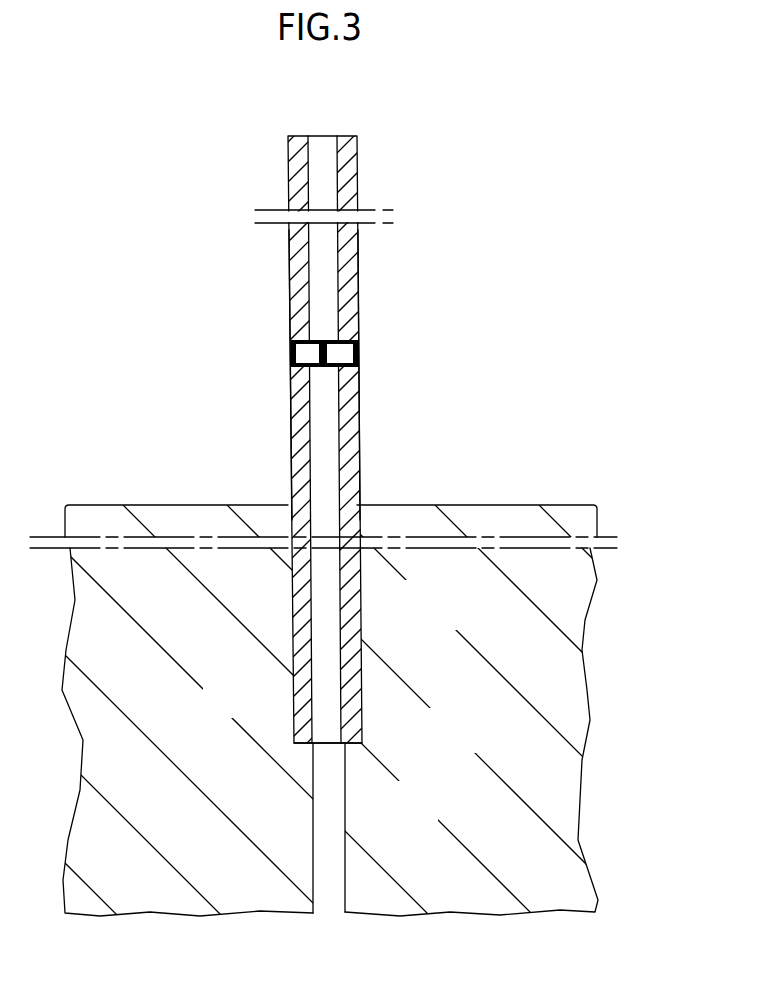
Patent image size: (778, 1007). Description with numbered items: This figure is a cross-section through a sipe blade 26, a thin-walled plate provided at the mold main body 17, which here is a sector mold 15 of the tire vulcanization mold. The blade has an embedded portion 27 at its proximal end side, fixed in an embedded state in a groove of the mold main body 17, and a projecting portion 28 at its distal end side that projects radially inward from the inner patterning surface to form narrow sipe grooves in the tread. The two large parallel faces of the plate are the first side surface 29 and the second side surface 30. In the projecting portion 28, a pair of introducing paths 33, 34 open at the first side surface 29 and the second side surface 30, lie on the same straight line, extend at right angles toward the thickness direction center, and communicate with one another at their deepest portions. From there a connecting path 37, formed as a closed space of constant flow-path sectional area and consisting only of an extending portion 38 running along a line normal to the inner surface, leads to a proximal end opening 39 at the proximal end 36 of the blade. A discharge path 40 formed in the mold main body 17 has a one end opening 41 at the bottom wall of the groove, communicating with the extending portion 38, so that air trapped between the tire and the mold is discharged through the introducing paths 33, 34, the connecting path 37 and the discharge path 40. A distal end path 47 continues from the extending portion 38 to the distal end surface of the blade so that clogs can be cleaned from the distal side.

The sector mold 15 is at (547, 658).
The mold main body 17 is at (526, 505).
The sipe blade 26 is at (395, 445).
The embedded portion 27 is at (362, 640).
The projecting portion 28 is at (360, 445).
The first side surface 29 is at (293, 292).
The second side surface 30 is at (358, 316).
The introducing path 33 is at (303, 357).
The introducing path 34 is at (355, 356).
The proximal end 36 is at (360, 745).
The connecting path 37 is at (320, 456).
The extending portion 38 is at (325, 412).
The proximal end opening 39 is at (317, 718).
The discharge path 40 is at (332, 862).
The one end opening 41 is at (317, 718).
The distal end path 47 is at (320, 182).